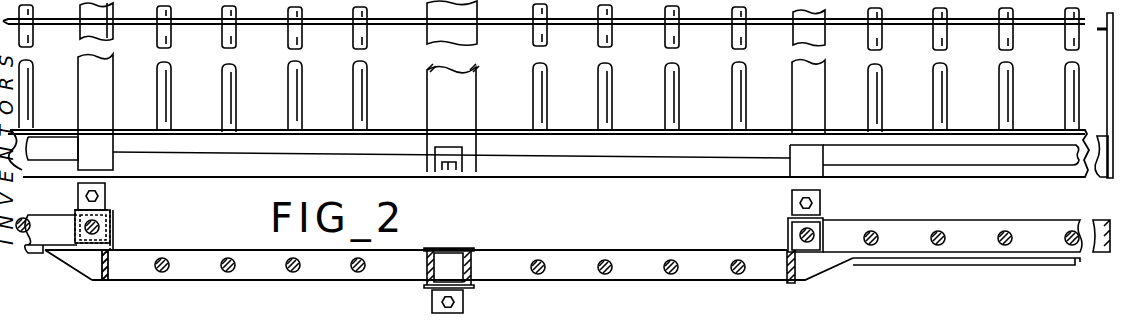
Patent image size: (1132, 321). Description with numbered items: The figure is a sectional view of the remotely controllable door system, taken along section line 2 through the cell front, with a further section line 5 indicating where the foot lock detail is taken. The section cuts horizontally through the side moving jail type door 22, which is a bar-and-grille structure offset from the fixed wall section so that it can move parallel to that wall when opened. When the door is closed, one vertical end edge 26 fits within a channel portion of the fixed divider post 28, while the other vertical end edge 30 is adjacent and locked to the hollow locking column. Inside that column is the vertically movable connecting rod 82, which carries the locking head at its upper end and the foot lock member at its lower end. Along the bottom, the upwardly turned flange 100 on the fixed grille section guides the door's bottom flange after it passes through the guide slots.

The section line 2 is at (1035, 55).
The section line 5 is at (983, 92).
The side moving jail type door 22 is at (668, 262).
The vertical end edge 26 is at (472, 262).
The fixed divider post 28 is at (452, 248).
The vertical end edge 30 is at (792, 285).
The connecting rod 82 is at (813, 234).
The upwardly turned flange 100 is at (903, 265).